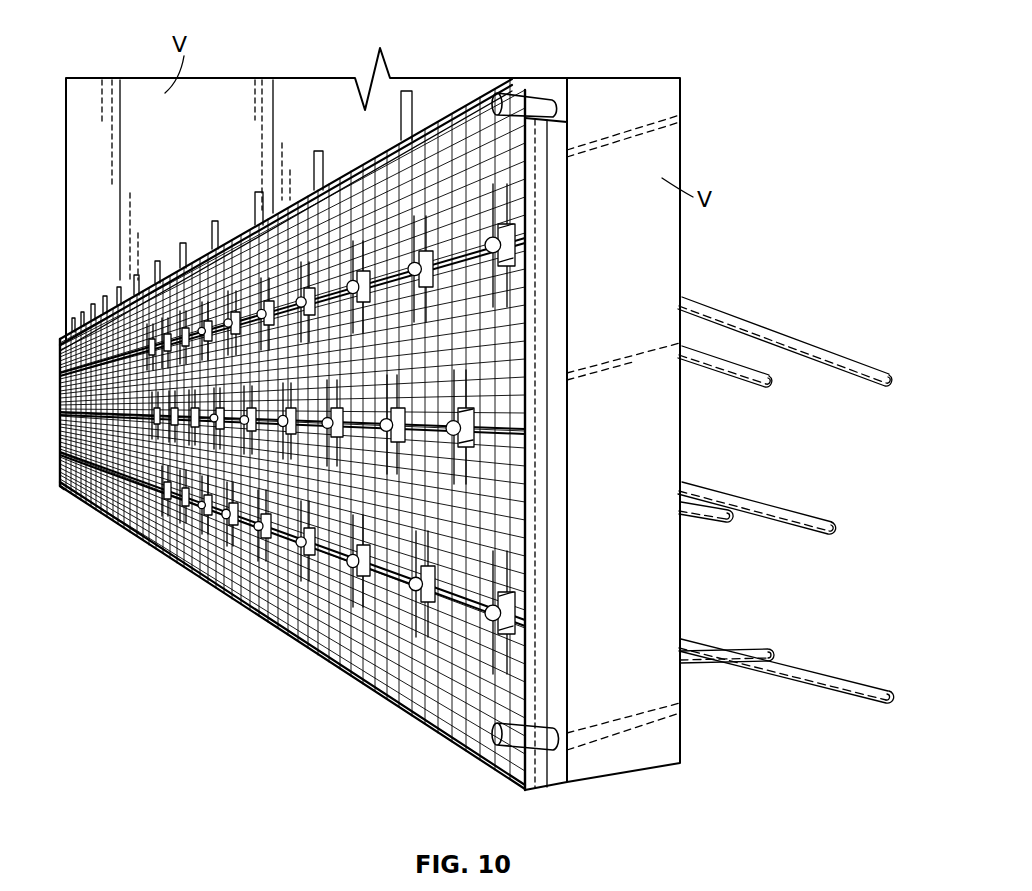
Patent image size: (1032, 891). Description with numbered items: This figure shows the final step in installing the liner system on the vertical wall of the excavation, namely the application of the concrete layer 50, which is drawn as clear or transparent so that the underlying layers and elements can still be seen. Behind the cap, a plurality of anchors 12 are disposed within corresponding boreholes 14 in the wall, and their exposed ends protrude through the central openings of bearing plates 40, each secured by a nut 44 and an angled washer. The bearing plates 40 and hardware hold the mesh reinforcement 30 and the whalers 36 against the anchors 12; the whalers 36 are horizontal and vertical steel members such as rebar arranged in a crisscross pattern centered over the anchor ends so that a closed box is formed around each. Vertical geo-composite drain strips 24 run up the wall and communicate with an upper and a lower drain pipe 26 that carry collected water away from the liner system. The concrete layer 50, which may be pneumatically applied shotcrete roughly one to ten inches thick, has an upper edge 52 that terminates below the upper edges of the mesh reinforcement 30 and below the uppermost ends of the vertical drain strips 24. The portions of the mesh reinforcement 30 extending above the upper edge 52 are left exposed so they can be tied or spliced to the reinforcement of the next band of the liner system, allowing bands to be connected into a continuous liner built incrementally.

The anchor 12 is at (790, 287).
The borehole 14 is at (838, 356).
The vertical geo-composite strip 24 is at (408, 90).
The drain pipe 26 is at (518, 88).
The mesh reinforcement 30 is at (482, 92).
The whaler 36 is at (514, 186).
The bearing plate 40 is at (505, 236).
The nut 44 is at (516, 246).
The concrete layer 50 is at (510, 270).
The upper edge 52 is at (450, 108).